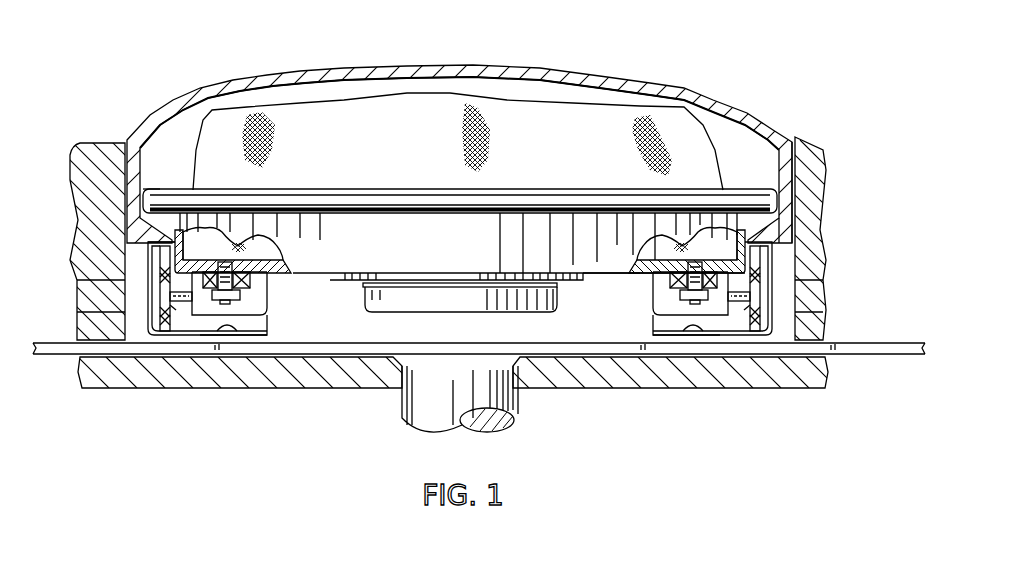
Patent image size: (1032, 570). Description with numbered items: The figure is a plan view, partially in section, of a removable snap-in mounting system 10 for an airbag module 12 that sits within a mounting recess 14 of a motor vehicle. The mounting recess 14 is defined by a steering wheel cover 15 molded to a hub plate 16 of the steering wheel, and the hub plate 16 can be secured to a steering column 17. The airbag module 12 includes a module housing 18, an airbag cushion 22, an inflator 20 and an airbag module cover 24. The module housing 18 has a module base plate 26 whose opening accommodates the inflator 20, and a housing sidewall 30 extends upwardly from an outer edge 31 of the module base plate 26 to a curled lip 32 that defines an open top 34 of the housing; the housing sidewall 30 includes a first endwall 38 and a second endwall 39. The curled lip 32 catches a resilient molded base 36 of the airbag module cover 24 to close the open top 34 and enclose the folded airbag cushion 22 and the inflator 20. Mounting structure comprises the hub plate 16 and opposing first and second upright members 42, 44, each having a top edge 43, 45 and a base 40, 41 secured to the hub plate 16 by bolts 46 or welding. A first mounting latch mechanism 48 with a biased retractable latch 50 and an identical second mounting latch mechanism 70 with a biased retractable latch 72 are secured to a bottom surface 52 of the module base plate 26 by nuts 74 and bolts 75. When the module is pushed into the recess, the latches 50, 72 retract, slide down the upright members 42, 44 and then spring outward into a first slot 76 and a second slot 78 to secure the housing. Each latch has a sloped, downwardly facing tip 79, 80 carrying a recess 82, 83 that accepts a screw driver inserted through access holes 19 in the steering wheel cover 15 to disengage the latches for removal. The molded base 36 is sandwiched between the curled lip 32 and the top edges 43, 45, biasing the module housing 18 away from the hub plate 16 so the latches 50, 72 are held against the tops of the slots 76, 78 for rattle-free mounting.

The mounting system 10 is at (666, 47).
The airbag module 12 is at (188, 93).
The mounting recess 14 is at (786, 133).
The steering wheel cover 15 is at (710, 390).
The hub plate 16 is at (860, 343).
The steering column 17 is at (517, 397).
The module housing 18 is at (279, 189).
The access holes 19 is at (90, 307).
The inflator 20 is at (431, 312).
The airbag cushion 22 is at (527, 100).
The airbag module cover 24 is at (574, 70).
The module base plate 26 is at (283, 262).
The housing sidewall 30 is at (473, 247).
The outer edge 31 is at (220, 244).
The curled lip 32 is at (377, 217).
The open top 34 is at (193, 187).
The molded base 36 is at (72, 178).
The first endwall 38 is at (725, 246).
The second endwall 39 is at (195, 246).
The base 40 is at (653, 338).
The base 41 is at (268, 332).
The first upright member 42 is at (762, 267).
The top edge 43 is at (795, 250).
The second upright member 44 is at (152, 265).
The top edge 45 is at (148, 242).
The bolts 46 is at (224, 327).
The first mounting latch mechanism 48 is at (655, 297).
The latch 50 is at (755, 287).
The bottom surface 52 is at (603, 278).
The second mounting latch mechanism 70 is at (272, 307).
The latch 72 is at (160, 280).
The nuts 74 is at (242, 293).
The bolts 75 is at (244, 248).
The first slot 76 is at (747, 300).
The second slot 78 is at (176, 310).
The tip 79 is at (757, 298).
The tip 80 is at (163, 297).
The recess 82 is at (742, 303).
The recess 83 is at (160, 302).